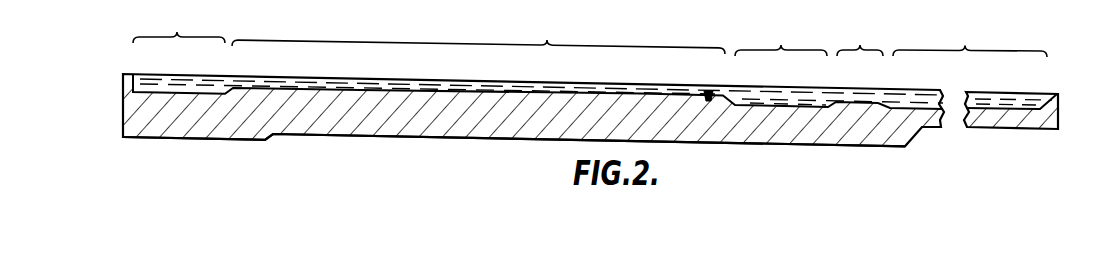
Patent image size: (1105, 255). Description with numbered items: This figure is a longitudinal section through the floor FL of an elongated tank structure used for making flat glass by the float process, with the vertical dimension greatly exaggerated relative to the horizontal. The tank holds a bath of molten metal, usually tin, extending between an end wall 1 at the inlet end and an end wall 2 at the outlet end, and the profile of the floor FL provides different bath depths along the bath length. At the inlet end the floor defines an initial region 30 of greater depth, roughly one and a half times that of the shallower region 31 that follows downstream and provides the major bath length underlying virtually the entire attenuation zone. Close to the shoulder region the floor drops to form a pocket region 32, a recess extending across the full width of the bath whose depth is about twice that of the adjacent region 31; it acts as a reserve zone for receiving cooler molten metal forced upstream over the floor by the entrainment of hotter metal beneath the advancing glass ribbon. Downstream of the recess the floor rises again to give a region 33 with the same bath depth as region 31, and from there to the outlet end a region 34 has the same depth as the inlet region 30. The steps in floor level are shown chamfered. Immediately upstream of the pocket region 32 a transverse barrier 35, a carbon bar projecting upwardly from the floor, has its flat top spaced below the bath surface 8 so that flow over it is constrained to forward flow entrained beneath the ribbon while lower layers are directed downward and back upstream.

The end wall 1 is at (127, 74).
The end wall 2 is at (1057, 93).
The bath surface 8 is at (326, 78).
The initial region 30 is at (179, 23).
The shallower region 31 is at (478, 32).
The pocket region 32 is at (781, 36).
The region adjacent the reserve zone 33 is at (860, 36).
The outlet end region 34 is at (970, 37).
The transverse barrier 35 is at (708, 91).
The floor FL is at (438, 136).